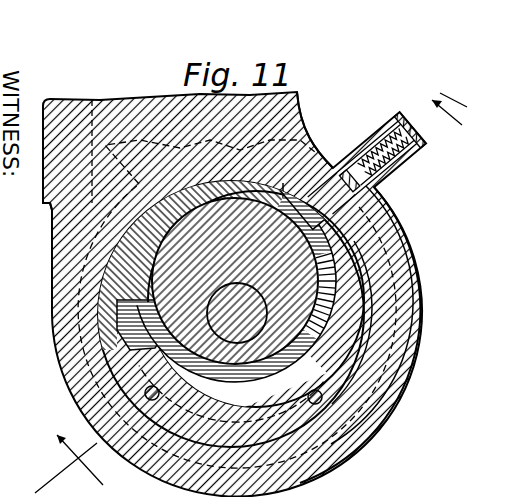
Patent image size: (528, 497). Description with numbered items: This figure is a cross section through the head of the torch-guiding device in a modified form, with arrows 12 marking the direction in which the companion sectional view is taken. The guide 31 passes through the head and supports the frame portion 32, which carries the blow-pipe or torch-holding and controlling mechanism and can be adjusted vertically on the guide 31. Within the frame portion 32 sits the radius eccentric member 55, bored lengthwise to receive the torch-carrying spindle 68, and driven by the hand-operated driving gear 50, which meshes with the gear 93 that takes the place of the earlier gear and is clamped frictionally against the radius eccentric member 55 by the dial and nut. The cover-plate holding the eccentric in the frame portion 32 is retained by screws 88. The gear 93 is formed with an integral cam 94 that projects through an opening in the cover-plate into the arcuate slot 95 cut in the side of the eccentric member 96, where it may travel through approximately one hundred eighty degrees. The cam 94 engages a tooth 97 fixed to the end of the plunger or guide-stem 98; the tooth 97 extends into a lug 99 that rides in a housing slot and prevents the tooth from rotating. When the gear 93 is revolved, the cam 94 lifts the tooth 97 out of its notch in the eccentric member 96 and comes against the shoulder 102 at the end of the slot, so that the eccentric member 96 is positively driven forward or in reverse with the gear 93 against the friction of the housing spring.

The section line indicator 12 is at (255, 294).
The guide 31 is at (50, 200).
The frame portion 32 is at (390, 417).
The driving gear 50 is at (300, 97).
The radius eccentric member 55 is at (412, 243).
The spindle 68 is at (390, 352).
The screws 88 is at (333, 455).
The gear 93 is at (372, 435).
The cam 94 is at (372, 220).
The arcuate slot 95 is at (388, 287).
The eccentric member 96 is at (395, 325).
The tooth 97 is at (413, 188).
The plunger or guide-stem 98 is at (435, 131).
The lug 99 is at (343, 186).
The shoulder 102 is at (300, 147).